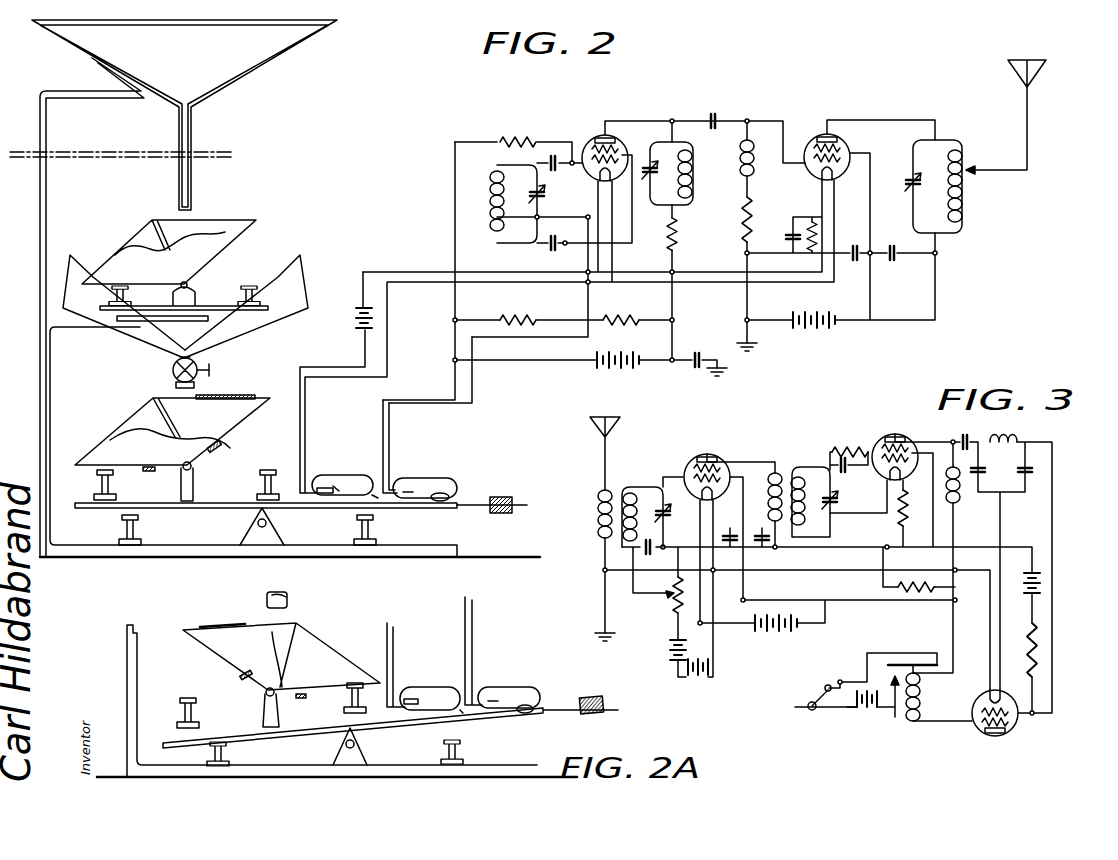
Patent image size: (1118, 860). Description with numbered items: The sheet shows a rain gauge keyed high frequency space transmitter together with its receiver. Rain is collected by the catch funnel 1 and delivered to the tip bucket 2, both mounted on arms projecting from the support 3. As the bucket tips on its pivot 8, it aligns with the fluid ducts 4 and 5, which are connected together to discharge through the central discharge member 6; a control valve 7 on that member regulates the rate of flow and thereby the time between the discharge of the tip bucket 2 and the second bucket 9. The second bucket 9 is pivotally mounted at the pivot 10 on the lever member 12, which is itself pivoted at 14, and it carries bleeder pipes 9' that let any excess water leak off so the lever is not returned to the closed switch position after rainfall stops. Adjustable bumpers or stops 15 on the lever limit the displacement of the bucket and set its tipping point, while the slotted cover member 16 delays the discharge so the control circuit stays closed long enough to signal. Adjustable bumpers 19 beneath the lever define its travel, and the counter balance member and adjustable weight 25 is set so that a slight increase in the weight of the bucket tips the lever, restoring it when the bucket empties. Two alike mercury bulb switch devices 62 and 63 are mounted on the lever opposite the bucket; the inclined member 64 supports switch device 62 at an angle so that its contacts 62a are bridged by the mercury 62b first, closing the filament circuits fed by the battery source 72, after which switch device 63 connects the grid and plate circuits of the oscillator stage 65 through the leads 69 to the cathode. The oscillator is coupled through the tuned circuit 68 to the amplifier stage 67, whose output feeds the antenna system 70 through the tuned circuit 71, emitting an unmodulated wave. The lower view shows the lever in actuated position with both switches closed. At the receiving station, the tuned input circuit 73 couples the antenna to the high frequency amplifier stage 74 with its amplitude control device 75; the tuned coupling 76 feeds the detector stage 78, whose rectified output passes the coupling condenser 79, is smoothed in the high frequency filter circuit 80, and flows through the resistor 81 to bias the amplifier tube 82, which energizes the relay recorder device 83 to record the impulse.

In FIG. 2, the catch funnel 1 is at (270, 62).
In FIG. 2, the tip bucket 2 is at (235, 220).
In FIG. 2, the support 3 is at (38, 212).
In FIG. 2A, the support 3 is at (127, 660).
In FIG. 2, the fluid duct 4 is at (140, 340).
In FIG. 2, the fluid duct 5 is at (250, 323).
In FIG. 2, the central discharge member 6 is at (178, 388).
In FIG. 2A, the central discharge member 6 is at (290, 605).
In FIG. 2, the control valve 7 is at (198, 362).
In FIG. 2, the pivot 8 is at (190, 285).
In FIG. 2, the second bucket 9 is at (173, 431).
In FIG. 2A, the second bucket 9 is at (270, 656).
In FIG. 2, the bleeder pipes 9' is at (187, 464).
In FIG. 2A, the bleeder pipes 9' is at (264, 696).
In FIG. 2, the pivot 10 is at (193, 467).
In FIG. 2A, the pivot 10 is at (264, 699).
In FIG. 2, the lever member 12 is at (218, 508).
In FIG. 2A, the lever member 12 is at (306, 739).
In FIG. 2, the pivot 14 is at (268, 523).
In FIG. 2, the adjustable bumpers or stops 15 is at (94, 472).
In FIG. 2A, the adjustable bumpers or stops 15 is at (178, 703).
In FIG. 2, the slotted cover member 16 is at (232, 397).
In FIG. 2, the adjustable bumpers 19 is at (120, 523).
In FIG. 2A, the adjustable bumpers 19 is at (212, 753).
In FIG. 2, the counter balance member and adjustable weight 25 is at (504, 490).
In FIG. 2, the switch device 62 is at (336, 475).
In FIG. 2A, the switch device 62 is at (436, 690).
In FIG. 2, the contacts 62a is at (322, 488).
In FIG. 2, the mercury 62b is at (338, 490).
In FIG. 2A, the mercury 62b is at (420, 696).
In FIG. 2, the switch device 63 is at (435, 478).
In FIG. 2A, the switch device 63 is at (498, 690).
In FIG. 2, the inclined member 64 is at (372, 498).
In FIG. 2A, the inclined member 64 is at (463, 714).
In FIG. 2, the oscillator stage 65 is at (588, 138).
In FIG. 2, the amplifier stage 67 is at (816, 132).
In FIG. 2, the tuned circuit 68 is at (688, 206).
In FIG. 2, the leads 69 is at (389, 434).
In FIG. 2A, the leads 69 is at (472, 636).
In FIG. 2, the antenna system 70 is at (1012, 64).
In FIG. 2, the tuned circuit 71 is at (933, 186).
In FIG. 2, the source 72 is at (348, 325).
In FIG. 3, the tuned input circuit 73 is at (644, 492).
In FIG. 3, the high frequency amplifier stage 74 is at (705, 454).
In FIG. 3, the amplitude control device 75 is at (672, 606).
In FIG. 3, the tuned coupling 76 is at (781, 469).
In FIG. 3, the detector stage 78 is at (892, 436).
In FIG. 3, the coupling condenser 79 is at (958, 440).
In FIG. 3, the high frequency filter circuit 80 is at (1001, 456).
In FIG. 3, the resistor 81 is at (1038, 654).
In FIG. 3, the amplifier tube 82 is at (980, 736).
In FIG. 3, the relay recorder device 83 is at (840, 686).